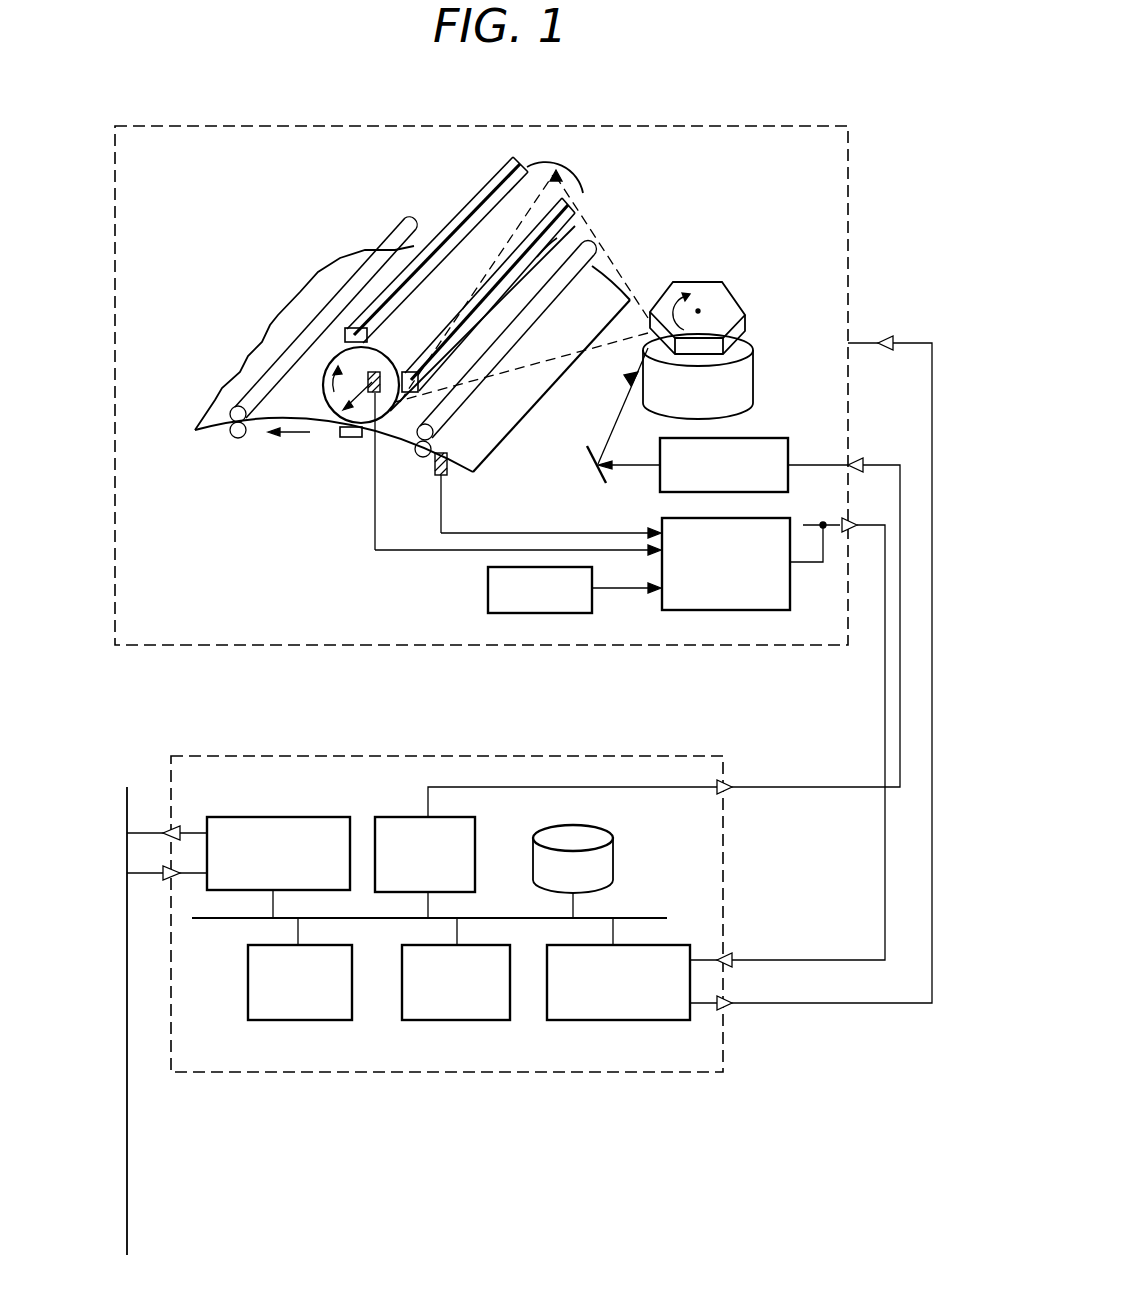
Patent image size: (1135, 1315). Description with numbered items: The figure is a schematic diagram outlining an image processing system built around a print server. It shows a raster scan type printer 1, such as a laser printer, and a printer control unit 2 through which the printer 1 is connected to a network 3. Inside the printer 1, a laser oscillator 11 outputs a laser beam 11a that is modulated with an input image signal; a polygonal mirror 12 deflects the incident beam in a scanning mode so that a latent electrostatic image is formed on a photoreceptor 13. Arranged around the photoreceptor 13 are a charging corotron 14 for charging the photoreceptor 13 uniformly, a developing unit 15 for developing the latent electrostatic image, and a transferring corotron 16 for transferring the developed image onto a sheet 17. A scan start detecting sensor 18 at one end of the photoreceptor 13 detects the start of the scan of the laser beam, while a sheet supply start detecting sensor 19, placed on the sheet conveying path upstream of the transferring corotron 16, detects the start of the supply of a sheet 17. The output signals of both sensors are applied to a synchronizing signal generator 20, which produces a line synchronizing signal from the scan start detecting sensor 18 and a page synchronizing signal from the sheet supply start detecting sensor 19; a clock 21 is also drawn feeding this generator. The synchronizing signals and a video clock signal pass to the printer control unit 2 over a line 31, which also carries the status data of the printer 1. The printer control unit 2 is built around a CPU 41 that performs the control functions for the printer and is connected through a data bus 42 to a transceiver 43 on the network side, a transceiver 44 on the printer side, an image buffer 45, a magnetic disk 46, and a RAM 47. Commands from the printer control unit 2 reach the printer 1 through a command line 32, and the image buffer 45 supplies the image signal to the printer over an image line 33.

The raster scan type printer 1 is at (274, 127).
The printer control unit 2 is at (352, 756).
The network 3 is at (129, 1150).
The laser oscillator 11 is at (765, 438).
The laser beam 11a is at (636, 470).
The polygonal mirror 12 is at (735, 293).
The photoreceptor 13 is at (540, 176).
The charging corotron 14 is at (492, 178).
The developing unit 15 is at (572, 212).
The transferring corotron 16 is at (350, 437).
The sheet 17 is at (487, 433).
The scan start detecting sensor 18 is at (366, 384).
The sheet supply start detecting sensor 19 is at (433, 463).
The synchronizing signal generator 20 is at (773, 610).
The clock 21 is at (582, 613).
The line 31 is at (898, 862).
The command line 32 is at (932, 907).
The image line 33 is at (827, 787).
The CPU 41 is at (325, 1020).
The data bus 42 is at (500, 918).
The transceiver 43 is at (318, 817).
The transceiver 44 is at (633, 1020).
The image buffer 45 is at (478, 832).
The magnetic disk 46 is at (614, 844).
The RAM 47 is at (482, 1020).